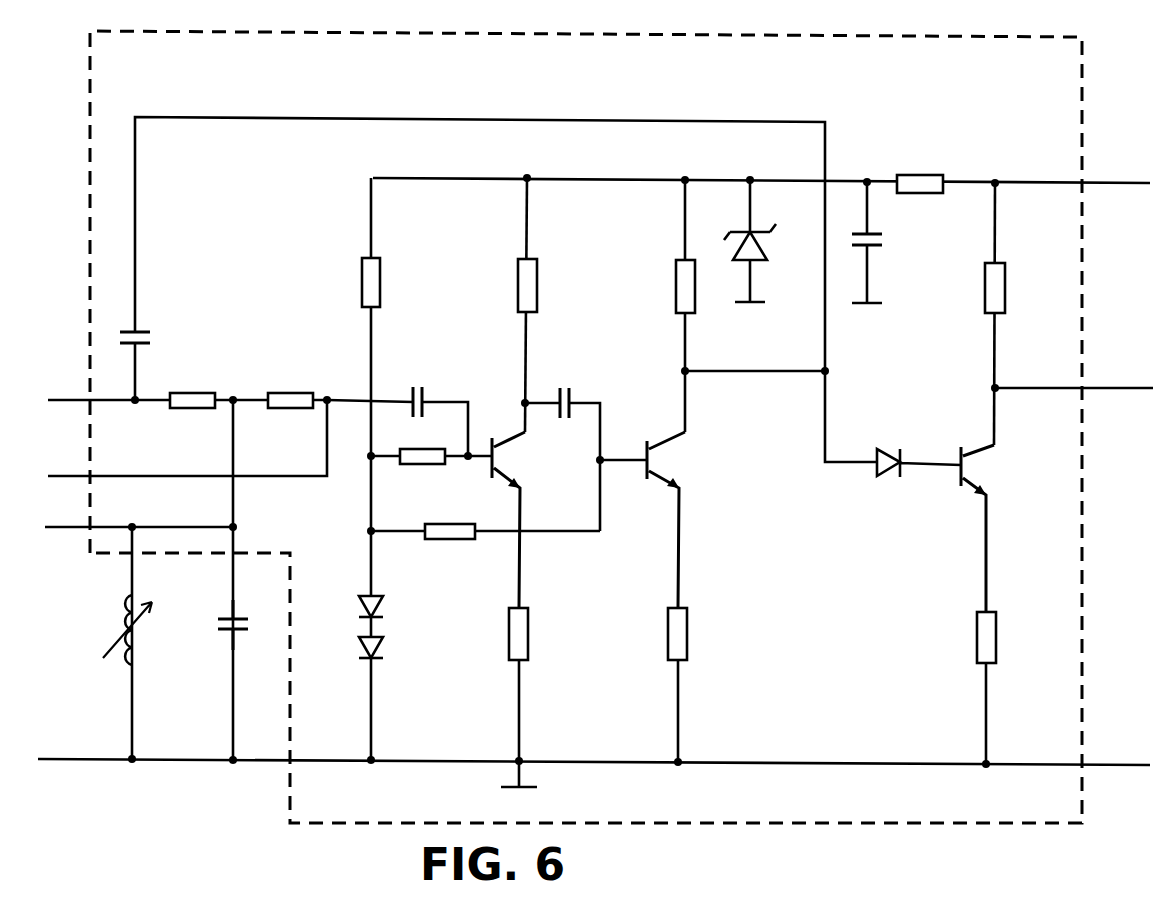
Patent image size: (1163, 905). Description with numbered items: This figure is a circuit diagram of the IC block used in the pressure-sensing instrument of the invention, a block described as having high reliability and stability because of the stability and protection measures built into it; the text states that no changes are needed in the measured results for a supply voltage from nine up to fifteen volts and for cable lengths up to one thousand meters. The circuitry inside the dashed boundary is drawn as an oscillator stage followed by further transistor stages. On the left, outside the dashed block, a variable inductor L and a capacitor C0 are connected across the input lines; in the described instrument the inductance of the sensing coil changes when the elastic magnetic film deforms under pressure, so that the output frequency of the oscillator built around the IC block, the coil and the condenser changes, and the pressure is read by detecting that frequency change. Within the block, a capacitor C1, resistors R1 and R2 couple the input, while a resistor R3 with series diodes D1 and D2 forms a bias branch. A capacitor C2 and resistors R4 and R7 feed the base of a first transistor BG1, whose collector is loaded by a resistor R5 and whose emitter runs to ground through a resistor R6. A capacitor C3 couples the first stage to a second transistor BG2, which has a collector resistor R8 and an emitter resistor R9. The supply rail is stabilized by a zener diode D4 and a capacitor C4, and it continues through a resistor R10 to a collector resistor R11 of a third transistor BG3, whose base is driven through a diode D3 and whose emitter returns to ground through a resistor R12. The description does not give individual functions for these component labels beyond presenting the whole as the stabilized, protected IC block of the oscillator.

The variable inductor L is at (127, 643).
The tuning capacitor C0 is at (251, 625).
The capacitor C1 is at (153, 341).
The resistor R1 is at (184, 387).
The resistor R2 is at (280, 387).
The resistor R3 is at (351, 469).
The diode D1 is at (392, 608).
The diode D2 is at (392, 649).
The capacitor C2 is at (432, 408).
The resistor R4 is at (431, 442).
The resistor R7 is at (485, 517).
The resistor R5 is at (506, 305).
The transistor BG1 is at (532, 520).
The resistor R6 is at (500, 684).
The capacitor C3 is at (586, 446).
The resistor R8 is at (731, 306).
The transistor BG2 is at (689, 520).
The resistor R9 is at (660, 685).
The zener diode D4 is at (764, 241).
The capacitor C4 is at (886, 242).
The resistor R10 is at (924, 170).
The resistor R11 is at (976, 314).
The diode D3 is at (919, 449).
The transistor BG3 is at (1002, 528).
The resistor R12 is at (963, 688).